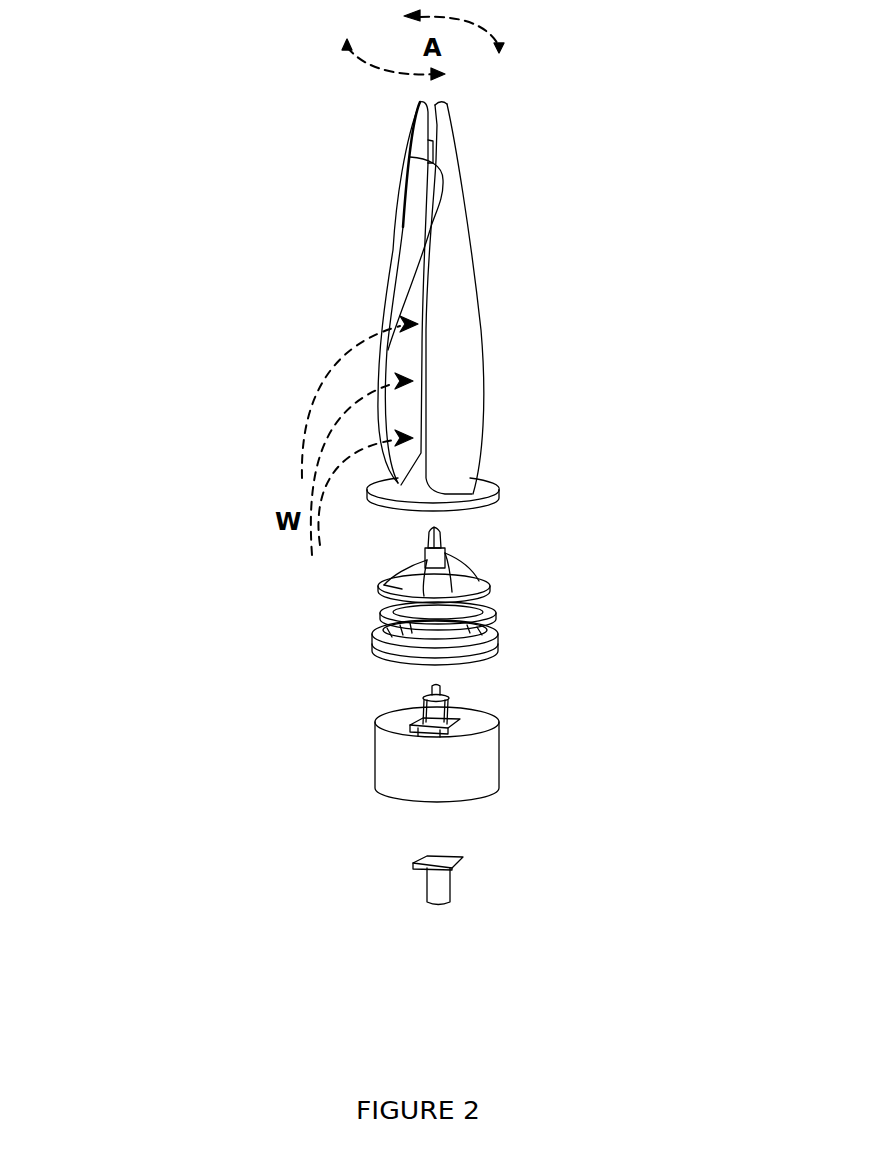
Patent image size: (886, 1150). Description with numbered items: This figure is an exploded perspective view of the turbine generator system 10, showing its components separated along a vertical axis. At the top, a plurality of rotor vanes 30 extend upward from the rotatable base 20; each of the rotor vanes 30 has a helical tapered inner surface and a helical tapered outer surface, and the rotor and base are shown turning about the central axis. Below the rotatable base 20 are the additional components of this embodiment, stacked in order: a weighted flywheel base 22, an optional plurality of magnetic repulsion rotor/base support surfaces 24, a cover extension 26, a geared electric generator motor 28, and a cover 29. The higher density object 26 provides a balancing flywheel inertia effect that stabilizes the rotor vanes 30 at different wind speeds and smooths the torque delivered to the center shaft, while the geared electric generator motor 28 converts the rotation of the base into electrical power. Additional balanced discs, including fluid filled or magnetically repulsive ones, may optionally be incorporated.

The turbine generator system 10 is at (340, 268).
The rotatable base 20 is at (401, 485).
The weighted flywheel base 22 is at (485, 569).
The magnetic repulsion rotor/base support surfaces 24 is at (483, 617).
The cover extension 26 is at (488, 634).
The geared electric generator motor 28 is at (436, 707).
The cover 29 is at (458, 787).
The rotor vanes 30 is at (412, 221).